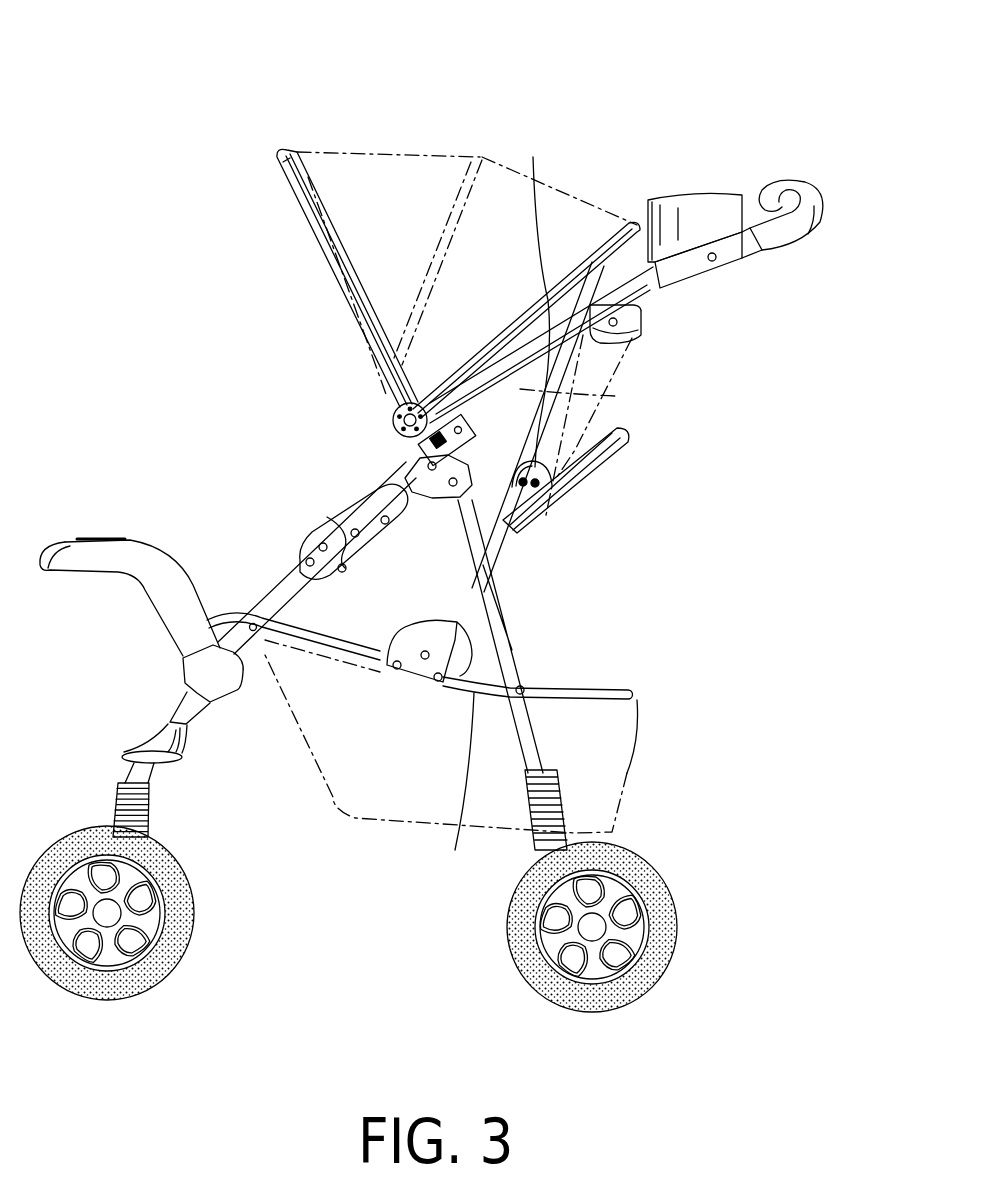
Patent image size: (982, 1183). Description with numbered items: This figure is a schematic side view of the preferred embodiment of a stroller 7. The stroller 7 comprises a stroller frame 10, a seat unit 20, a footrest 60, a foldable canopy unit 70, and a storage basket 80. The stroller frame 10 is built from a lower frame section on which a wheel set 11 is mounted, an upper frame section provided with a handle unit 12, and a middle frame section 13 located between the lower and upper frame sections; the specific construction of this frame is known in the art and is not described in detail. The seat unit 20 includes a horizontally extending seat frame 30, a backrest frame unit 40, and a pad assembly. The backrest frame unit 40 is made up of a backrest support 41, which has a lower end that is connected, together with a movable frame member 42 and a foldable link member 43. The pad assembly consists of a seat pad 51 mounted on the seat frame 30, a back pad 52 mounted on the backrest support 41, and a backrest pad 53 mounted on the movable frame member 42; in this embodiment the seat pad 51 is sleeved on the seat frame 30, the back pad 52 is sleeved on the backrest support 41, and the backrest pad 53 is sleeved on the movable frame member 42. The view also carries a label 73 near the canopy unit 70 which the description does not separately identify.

The stroller 7 is at (731, 150).
The stroller frame 10 is at (392, 470).
The wheel set 11 is at (193, 938).
The handle unit 12 is at (818, 198).
The middle frame section 13 is at (534, 156).
The seat unit 20 is at (210, 594).
The seat frame 30 is at (477, 726).
The backrest frame unit 40 is at (515, 557).
The backrest support 41 is at (553, 510).
The movable frame member 42 is at (520, 440).
The foldable link member 43 is at (592, 480).
The seat pad 51 is at (238, 610).
The back pad 52 is at (522, 527).
The backrest pad 53 is at (617, 397).
The footrest 60 is at (188, 773).
The foldable canopy unit 70 is at (384, 138).
The canopy fabric 73 is at (333, 167).
The storage basket 80 is at (386, 836).